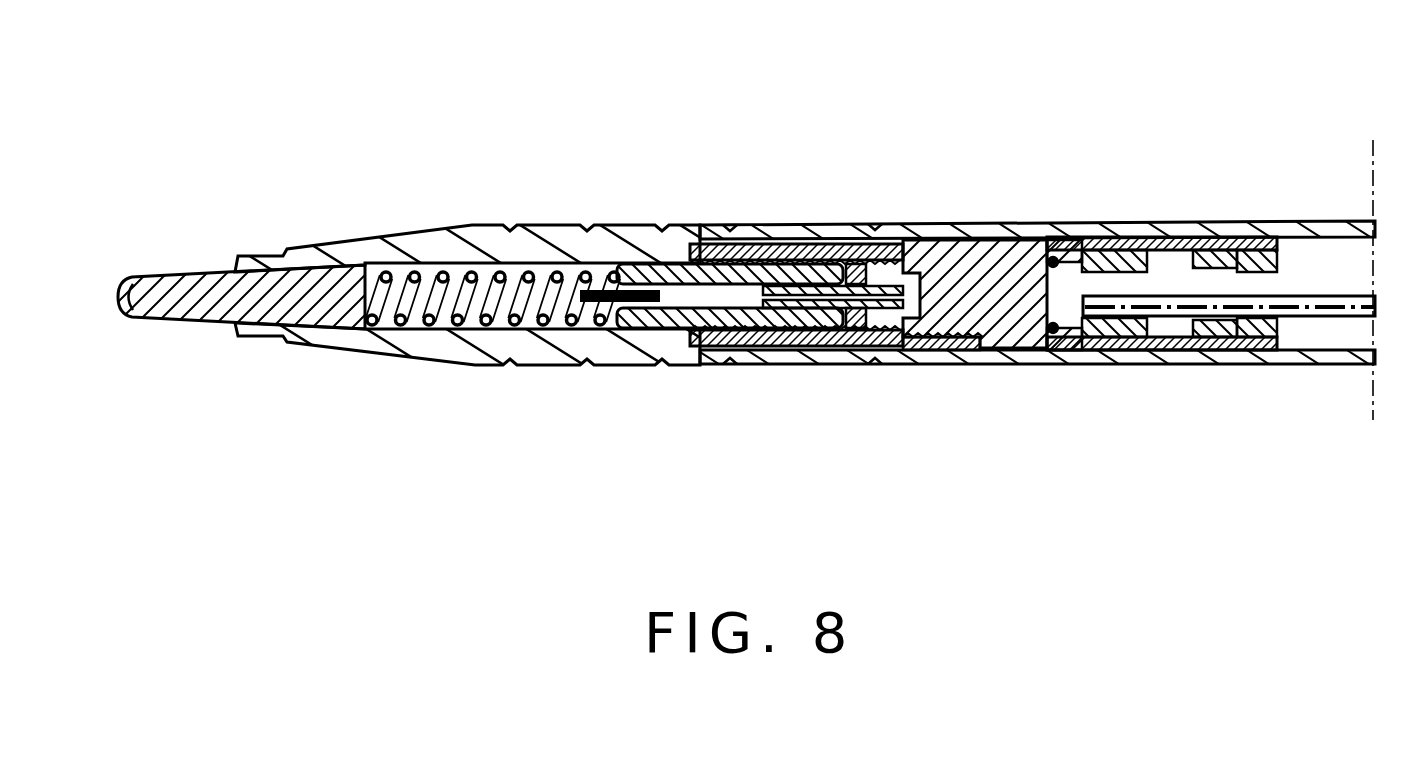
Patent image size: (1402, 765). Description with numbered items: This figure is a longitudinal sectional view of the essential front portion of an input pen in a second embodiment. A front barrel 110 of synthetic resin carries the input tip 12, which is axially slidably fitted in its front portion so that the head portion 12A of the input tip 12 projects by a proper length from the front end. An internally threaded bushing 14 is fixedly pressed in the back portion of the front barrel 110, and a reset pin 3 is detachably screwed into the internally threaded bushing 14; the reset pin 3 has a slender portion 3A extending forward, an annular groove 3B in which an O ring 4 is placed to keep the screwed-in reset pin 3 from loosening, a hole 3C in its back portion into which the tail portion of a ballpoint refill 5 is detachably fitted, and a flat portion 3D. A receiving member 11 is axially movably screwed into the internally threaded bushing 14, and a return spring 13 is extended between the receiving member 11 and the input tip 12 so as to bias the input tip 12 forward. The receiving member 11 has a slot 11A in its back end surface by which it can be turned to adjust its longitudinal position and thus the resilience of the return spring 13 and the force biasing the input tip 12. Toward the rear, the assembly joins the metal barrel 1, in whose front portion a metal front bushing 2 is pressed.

The barrel 1 is at (1291, 224).
The front bushing 2 is at (1164, 242).
The reset pin 3 is at (985, 242).
The slender portion 3A is at (776, 345).
The annular groove 3B is at (1068, 345).
The hole 3C is at (1135, 350).
The flat portion 3D is at (928, 350).
The O ring 4 is at (1057, 248).
The ballpoint refill 5 is at (1358, 282).
The receiving member 11 is at (679, 264).
The slot 11A is at (855, 344).
The input tip 12 is at (217, 266).
The head portion 12A is at (137, 325).
The return spring 13 is at (436, 264).
The internally threaded bushing 14 is at (913, 244).
The front barrel 110 is at (557, 245).